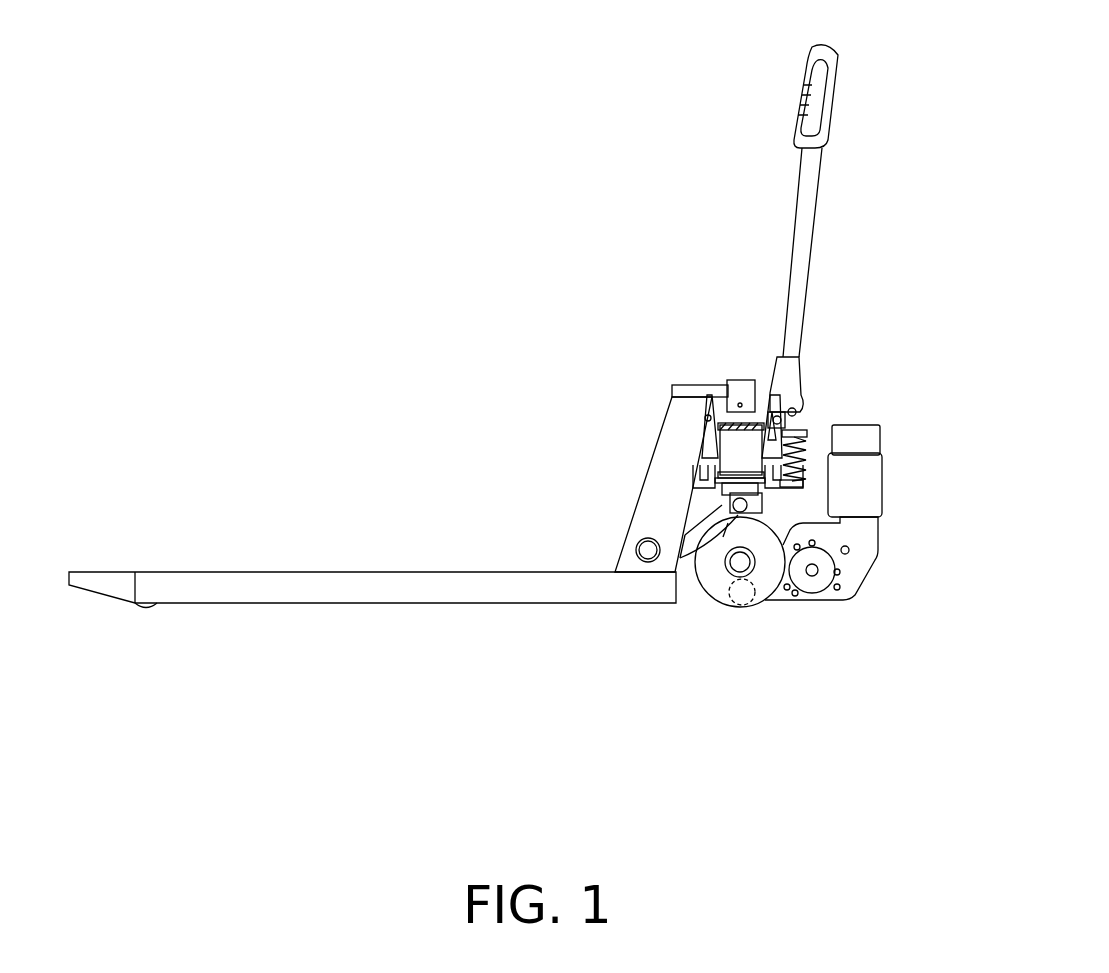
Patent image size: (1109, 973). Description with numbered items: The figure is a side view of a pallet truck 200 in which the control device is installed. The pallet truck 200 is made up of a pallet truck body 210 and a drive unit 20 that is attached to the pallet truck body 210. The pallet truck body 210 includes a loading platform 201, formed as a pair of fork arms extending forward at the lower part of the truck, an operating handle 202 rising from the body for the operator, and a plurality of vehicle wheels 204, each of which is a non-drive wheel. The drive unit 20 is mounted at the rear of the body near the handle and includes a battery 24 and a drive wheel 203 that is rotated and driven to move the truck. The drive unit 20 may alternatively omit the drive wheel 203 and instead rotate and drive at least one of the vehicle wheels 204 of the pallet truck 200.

The pallet truck 200 is at (553, 160).
The loading platform 201 is at (332, 572).
The operating handle 202 is at (827, 80).
The drive wheel 203 is at (762, 597).
The vehicle wheel 204 is at (692, 603).
The pallet truck body 210 is at (658, 413).
The drive unit 20 is at (840, 600).
The battery 24 is at (868, 438).